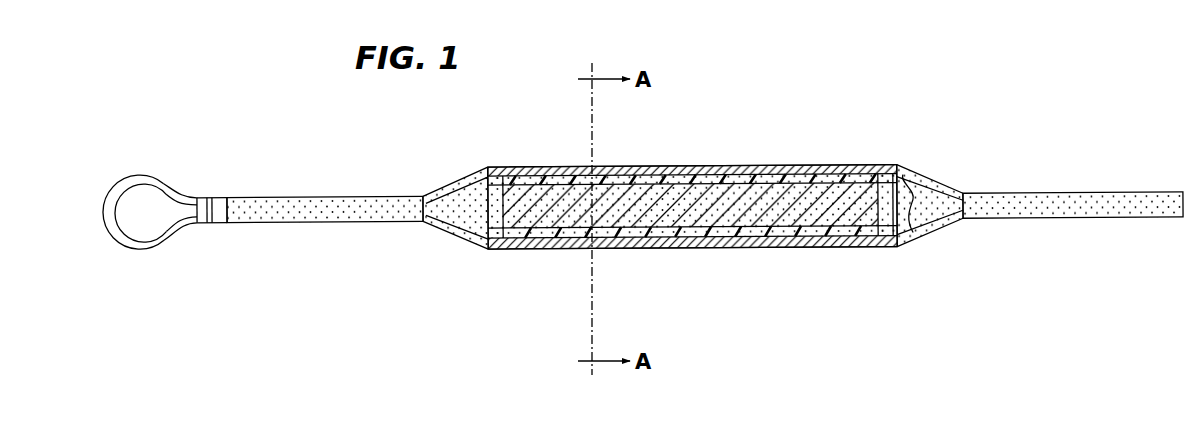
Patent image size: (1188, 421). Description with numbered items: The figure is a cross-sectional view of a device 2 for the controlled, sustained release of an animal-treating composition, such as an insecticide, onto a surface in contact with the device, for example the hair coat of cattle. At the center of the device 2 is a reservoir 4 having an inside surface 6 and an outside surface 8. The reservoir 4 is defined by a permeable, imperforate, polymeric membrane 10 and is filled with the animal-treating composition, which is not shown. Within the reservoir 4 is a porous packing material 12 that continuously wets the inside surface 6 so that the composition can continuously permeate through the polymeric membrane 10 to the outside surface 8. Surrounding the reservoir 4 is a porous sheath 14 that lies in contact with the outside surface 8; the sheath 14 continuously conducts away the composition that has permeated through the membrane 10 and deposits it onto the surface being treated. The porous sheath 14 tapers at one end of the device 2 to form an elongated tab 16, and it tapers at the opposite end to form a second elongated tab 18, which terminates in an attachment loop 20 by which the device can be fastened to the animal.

The device 2 is at (762, 123).
The reservoir 4 is at (487, 249).
The inside surface 6 is at (470, 244).
The outside surface 8 is at (496, 253).
The polymeric membrane 10 is at (547, 244).
The porous packing material 12 is at (760, 250).
The porous sheath 14 is at (977, 193).
The elongated tab 16 is at (1120, 195).
The elongated tab 18 is at (323, 195).
The attachment loop 20 is at (156, 194).